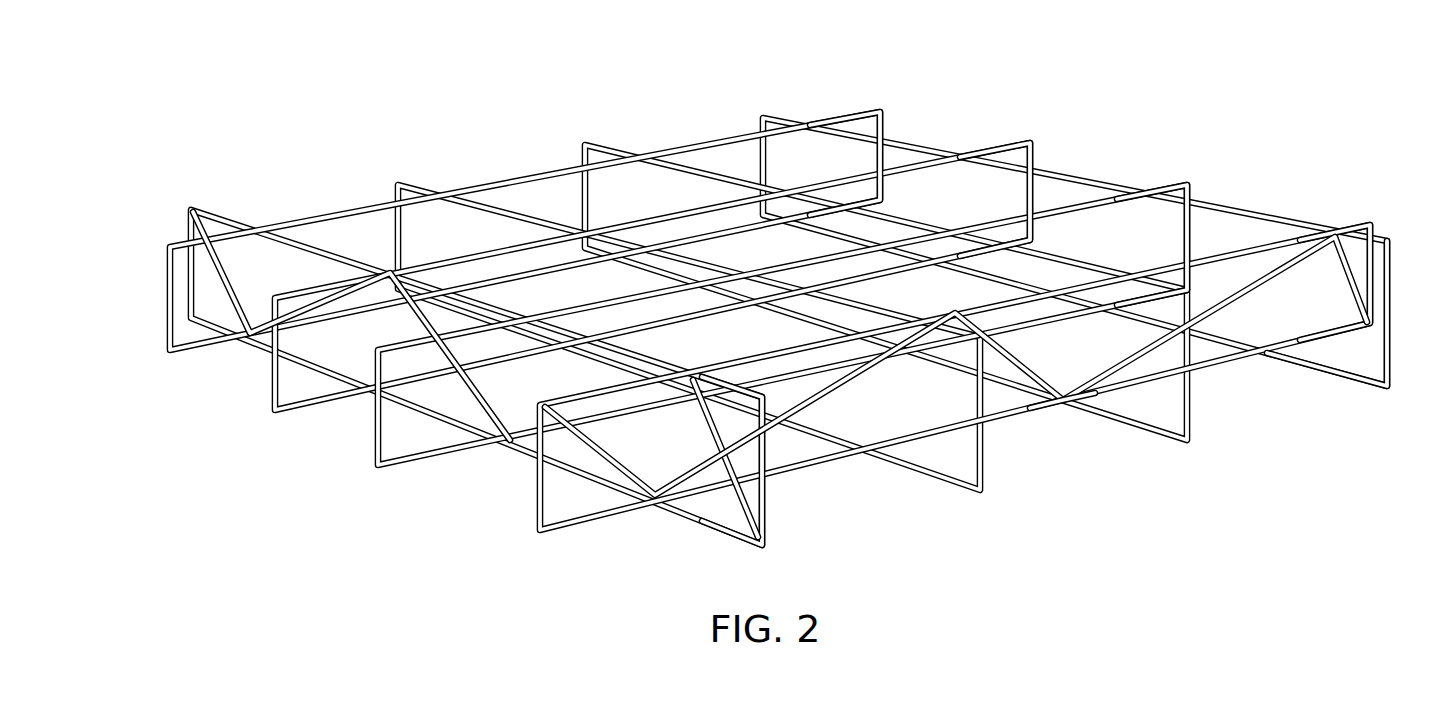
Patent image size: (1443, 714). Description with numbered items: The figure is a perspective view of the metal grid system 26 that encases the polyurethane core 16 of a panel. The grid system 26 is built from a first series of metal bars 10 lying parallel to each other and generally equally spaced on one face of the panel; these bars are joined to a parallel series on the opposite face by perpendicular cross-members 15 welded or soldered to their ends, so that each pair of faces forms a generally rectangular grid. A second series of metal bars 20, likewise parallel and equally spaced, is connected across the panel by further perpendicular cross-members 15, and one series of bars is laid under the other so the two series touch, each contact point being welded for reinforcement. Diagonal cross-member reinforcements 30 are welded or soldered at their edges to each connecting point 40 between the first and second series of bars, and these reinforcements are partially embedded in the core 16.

The first series of metal bars 10 is at (212, 355).
The perpendicular cross-members 15 is at (882, 110).
The polyurethane core 16 is at (770, 532).
The second series of metal bars 20 is at (195, 209).
The metal grid system 26 is at (1350, 386).
The diagonal cross-member reinforcements 30 is at (1278, 275).
The connecting point 40 is at (1063, 407).